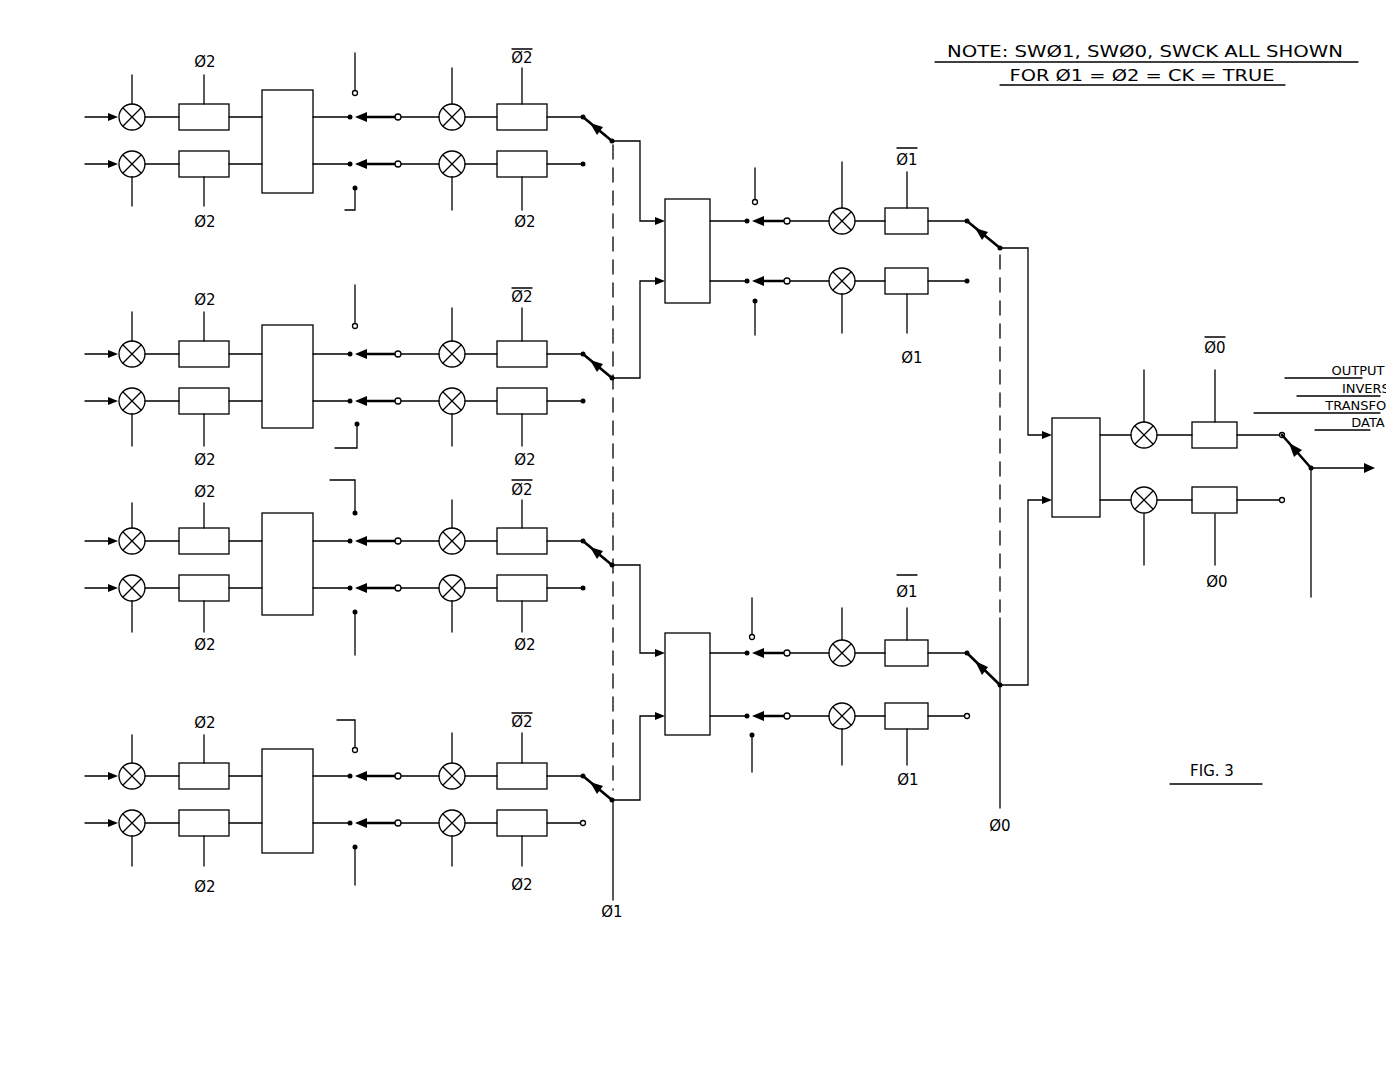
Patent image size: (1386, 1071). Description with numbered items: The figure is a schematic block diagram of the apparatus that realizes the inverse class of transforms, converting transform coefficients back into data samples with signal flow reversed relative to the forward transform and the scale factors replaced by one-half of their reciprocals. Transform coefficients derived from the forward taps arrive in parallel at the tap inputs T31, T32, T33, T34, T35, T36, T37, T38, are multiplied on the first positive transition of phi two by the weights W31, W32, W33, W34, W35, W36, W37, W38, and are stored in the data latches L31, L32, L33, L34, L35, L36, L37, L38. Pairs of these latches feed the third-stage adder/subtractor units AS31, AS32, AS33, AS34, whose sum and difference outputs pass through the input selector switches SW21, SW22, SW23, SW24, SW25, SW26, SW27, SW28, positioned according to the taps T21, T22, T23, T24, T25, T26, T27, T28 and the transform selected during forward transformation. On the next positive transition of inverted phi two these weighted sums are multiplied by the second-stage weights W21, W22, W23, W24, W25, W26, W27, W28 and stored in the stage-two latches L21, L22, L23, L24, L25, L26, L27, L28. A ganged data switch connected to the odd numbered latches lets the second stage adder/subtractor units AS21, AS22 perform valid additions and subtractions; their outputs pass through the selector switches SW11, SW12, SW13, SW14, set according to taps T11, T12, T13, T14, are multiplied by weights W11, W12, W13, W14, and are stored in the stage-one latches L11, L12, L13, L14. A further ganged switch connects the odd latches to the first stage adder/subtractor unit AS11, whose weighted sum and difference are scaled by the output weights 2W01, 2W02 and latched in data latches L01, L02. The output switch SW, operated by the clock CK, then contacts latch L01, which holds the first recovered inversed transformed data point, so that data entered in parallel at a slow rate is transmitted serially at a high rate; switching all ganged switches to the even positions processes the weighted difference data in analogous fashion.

The tap input T31 is at (78, 117).
The tap input T32 is at (78, 164).
The tap input T33 is at (78, 354).
The tap input T34 is at (78, 401).
The tap input T35 is at (78, 541).
The tap input T36 is at (78, 588).
The tap input T37 is at (78, 776).
The tap input T38 is at (78, 823).
The weight W31 is at (132, 91).
The weight W32 is at (132, 191).
The weight W33 is at (132, 329).
The weight W34 is at (132, 428).
The weight W35 is at (132, 518).
The weight W36 is at (132, 614).
The weight W37 is at (132, 751).
The weight W38 is at (132, 853).
The data latch L31 is at (203, 117).
The data latch L32 is at (203, 164).
The data latch L33 is at (203, 354).
The data latch L34 is at (203, 401).
The data latch L35 is at (203, 541).
The data latch L36 is at (203, 588).
The data latch L37 is at (203, 776).
The data latch L38 is at (203, 823).
The adder/subtractor unit AS31 is at (272, 100).
The adder/subtractor unit AS32 is at (277, 340).
The adder/subtractor unit AS33 is at (286, 602).
The adder/subtractor unit AS34 is at (285, 840).
The second stage adder/subtractor unit AS21 is at (683, 207).
The second stage adder/subtractor unit AS22 is at (680, 645).
The first stage adder/subtractor unit AS11 is at (1062, 430).
The tap T21 is at (357, 56).
The tap T22 is at (335, 203).
The tap T23 is at (356, 296).
The tap T24 is at (327, 440).
The tap T25 is at (327, 493).
The tap T26 is at (361, 646).
The tap T27 is at (327, 732).
The tap T28 is at (361, 880).
The tap T11 is at (757, 174).
The tap T12 is at (756, 333).
The tap T13 is at (756, 607).
The tap T14 is at (751, 768).
The input selector switch SW21 is at (374, 108).
The input selector switch SW22 is at (372, 171).
The input selector switch SW23 is at (374, 345).
The input selector switch SW24 is at (372, 408).
The input selector switch SW25 is at (370, 532).
The input selector switch SW26 is at (368, 595).
The input selector switch SW27 is at (370, 767).
The input selector switch SW28 is at (368, 830).
The input selector switch SW11 is at (775, 213).
The input selector switch SW12 is at (770, 288).
The input selector switch SW13 is at (773, 645).
The input selector switch SW14 is at (772, 722).
The second stage weight W21 is at (452, 89).
The second stage weight W22 is at (452, 191).
The second stage weight W23 is at (455, 327).
The second stage weight W24 is at (455, 428).
The second stage weight W25 is at (455, 517).
The second stage weight W26 is at (455, 614).
The second stage weight W27 is at (455, 751).
The second stage weight W28 is at (452, 852).
The first stage weight W11 is at (842, 188).
The first stage weight W12 is at (845, 317).
The first stage weight W13 is at (845, 624).
The first stage weight W14 is at (845, 746).
The stage 2 data latch L21 is at (522, 117).
The stage 2 data latch L22 is at (522, 164).
The stage 2 data latch L23 is at (522, 354).
The stage 2 data latch L24 is at (522, 401).
The stage 2 data latch L25 is at (522, 541).
The stage 2 data latch L26 is at (522, 588).
The stage 2 data latch L27 is at (522, 776).
The stage 2 data latch L28 is at (522, 823).
The stage 1 data latch L11 is at (906, 221).
The stage 1 data latch L12 is at (906, 281).
The stage 1 data latch L13 is at (906, 653).
The stage 1 data latch L14 is at (906, 716).
The output weight 2W01 is at (1147, 397).
The output weight 2W02 is at (1146, 539).
The data latch L01 is at (1214, 435).
The data latch L02 is at (1214, 500).
The data switch SWCK SW is at (1295, 455).
The clock CK is at (1310, 545).